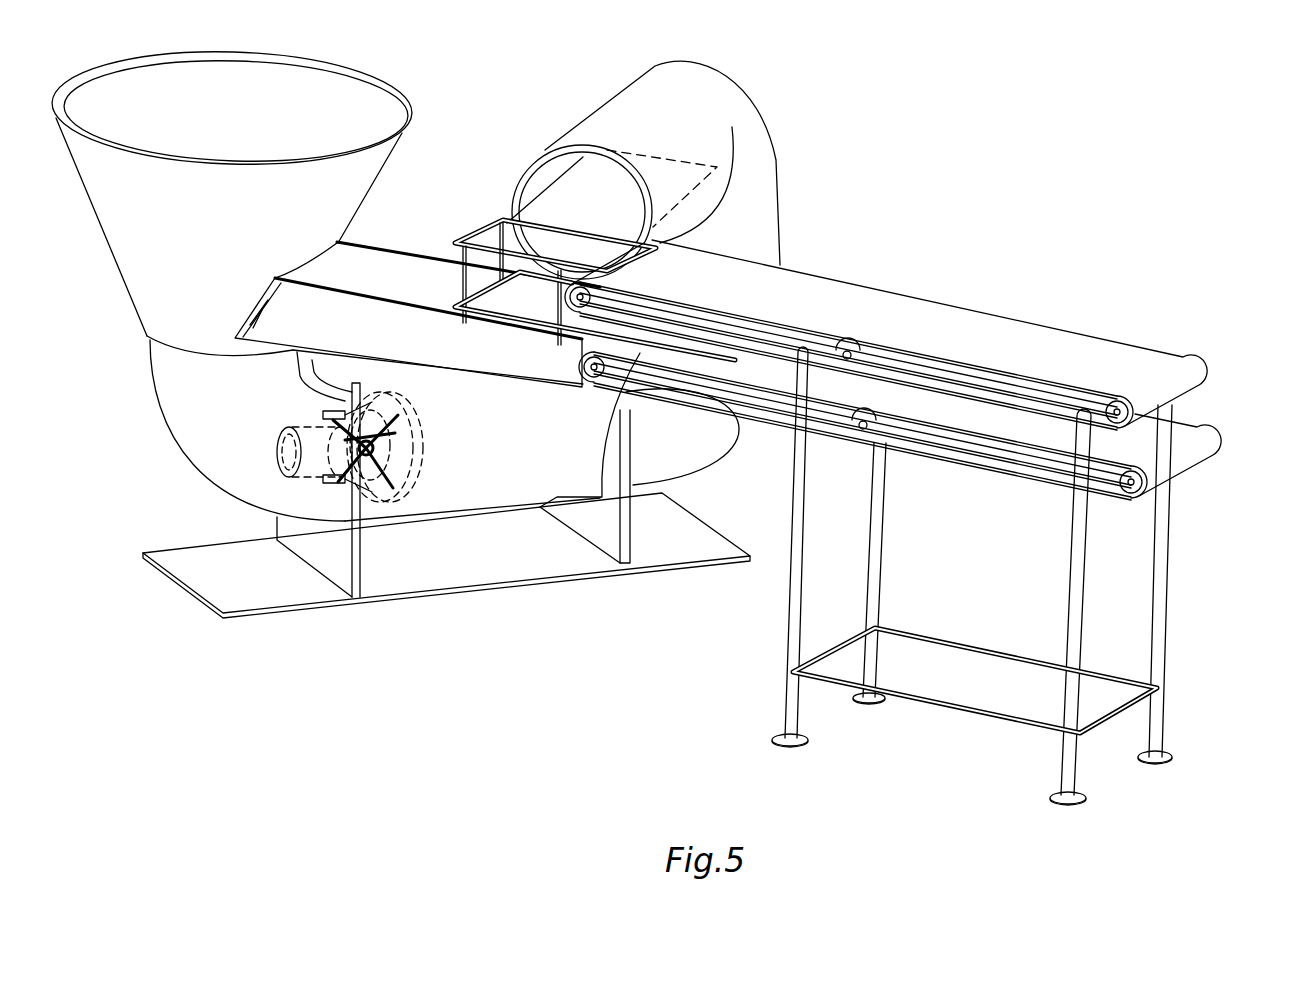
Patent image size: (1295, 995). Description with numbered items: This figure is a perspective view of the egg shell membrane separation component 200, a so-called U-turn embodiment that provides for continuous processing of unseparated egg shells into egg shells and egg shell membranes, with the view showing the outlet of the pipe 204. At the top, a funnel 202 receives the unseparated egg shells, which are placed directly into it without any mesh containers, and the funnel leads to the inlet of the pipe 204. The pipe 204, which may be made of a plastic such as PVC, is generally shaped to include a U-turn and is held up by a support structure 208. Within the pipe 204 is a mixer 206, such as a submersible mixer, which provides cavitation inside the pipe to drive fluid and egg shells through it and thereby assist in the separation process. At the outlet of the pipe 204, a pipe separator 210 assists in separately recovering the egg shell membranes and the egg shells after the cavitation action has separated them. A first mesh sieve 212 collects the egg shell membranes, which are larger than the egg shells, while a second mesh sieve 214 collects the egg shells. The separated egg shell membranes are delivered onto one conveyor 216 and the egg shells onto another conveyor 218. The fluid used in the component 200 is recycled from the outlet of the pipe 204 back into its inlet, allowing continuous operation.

The egg shell membrane separation component 200 is at (1022, 135).
The funnel 202 is at (396, 104).
The pipe 204 is at (180, 428).
The mixer 206 is at (402, 424).
The support structure 208 is at (168, 553).
The pipe separator 210 is at (557, 213).
The first sieve 212 is at (470, 236).
The second sieve 214 is at (500, 303).
The conveyor 216 is at (1196, 365).
The conveyor 218 is at (1213, 447).